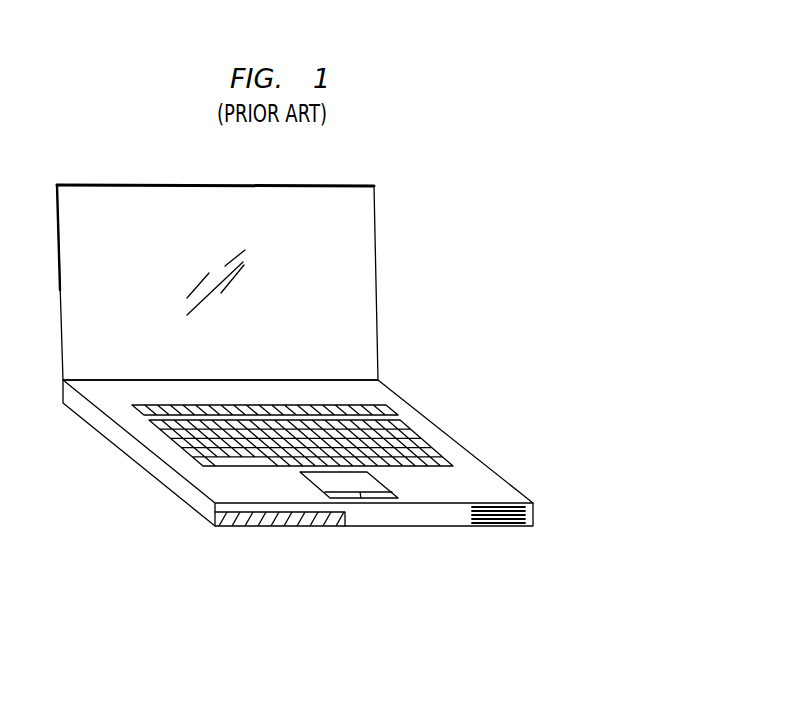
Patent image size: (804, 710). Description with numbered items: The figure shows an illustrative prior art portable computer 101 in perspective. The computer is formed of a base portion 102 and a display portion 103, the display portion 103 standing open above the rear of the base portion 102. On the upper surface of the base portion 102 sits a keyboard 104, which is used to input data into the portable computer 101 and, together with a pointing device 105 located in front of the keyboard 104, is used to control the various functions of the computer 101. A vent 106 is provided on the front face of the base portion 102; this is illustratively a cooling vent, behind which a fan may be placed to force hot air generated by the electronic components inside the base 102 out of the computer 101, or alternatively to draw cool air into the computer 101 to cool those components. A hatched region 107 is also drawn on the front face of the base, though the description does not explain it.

The portable computer 101 is at (578, 227).
The base portion 102 is at (477, 461).
The display portion 103 is at (376, 243).
The keyboard 104 is at (415, 429).
The pointing device 105 is at (313, 480).
The vent 106 is at (505, 523).
The hatched panel / battery 107 is at (317, 516).